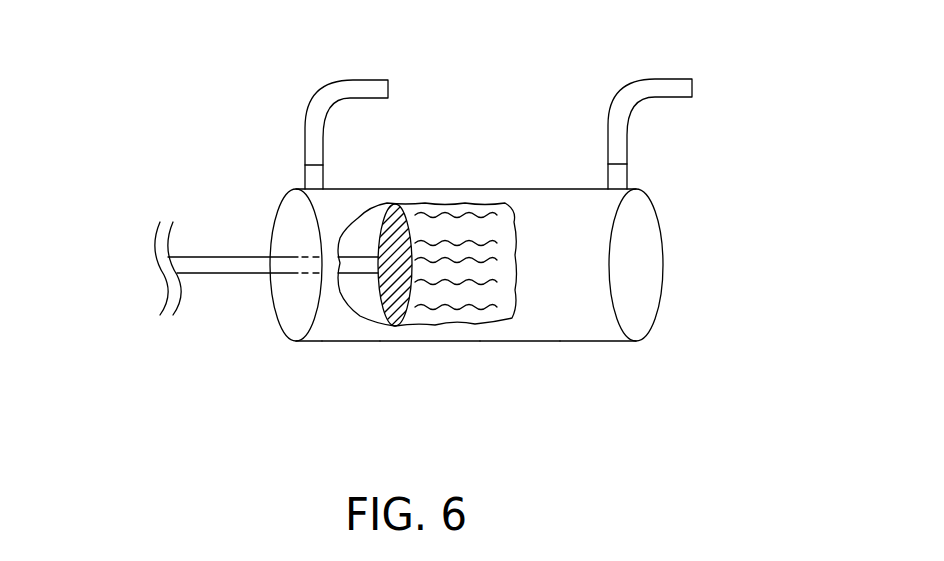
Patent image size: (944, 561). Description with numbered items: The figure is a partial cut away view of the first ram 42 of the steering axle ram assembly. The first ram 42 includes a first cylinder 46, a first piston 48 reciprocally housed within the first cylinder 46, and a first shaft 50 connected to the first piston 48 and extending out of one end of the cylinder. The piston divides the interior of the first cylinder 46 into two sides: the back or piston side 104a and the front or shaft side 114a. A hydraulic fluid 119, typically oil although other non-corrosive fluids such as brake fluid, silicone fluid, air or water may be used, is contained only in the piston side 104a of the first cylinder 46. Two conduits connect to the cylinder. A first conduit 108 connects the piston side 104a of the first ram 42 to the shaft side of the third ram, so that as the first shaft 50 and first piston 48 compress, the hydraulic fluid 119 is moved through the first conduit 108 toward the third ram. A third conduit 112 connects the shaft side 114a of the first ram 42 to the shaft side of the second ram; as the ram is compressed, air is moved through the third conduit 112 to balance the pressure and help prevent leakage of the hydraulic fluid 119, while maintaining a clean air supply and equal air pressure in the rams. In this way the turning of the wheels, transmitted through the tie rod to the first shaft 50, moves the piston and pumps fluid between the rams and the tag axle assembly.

The first ram 42 is at (760, 145).
The first cylinder 46 is at (556, 189).
The first piston 48 is at (410, 197).
The first shaft 50 is at (218, 258).
The piston side of the first ram 104a is at (517, 322).
The first conduit 108 is at (652, 79).
The third conduit 112 is at (358, 90).
The shaft side of the first ram 114a is at (340, 323).
The hydraulic fluid 119 is at (445, 308).